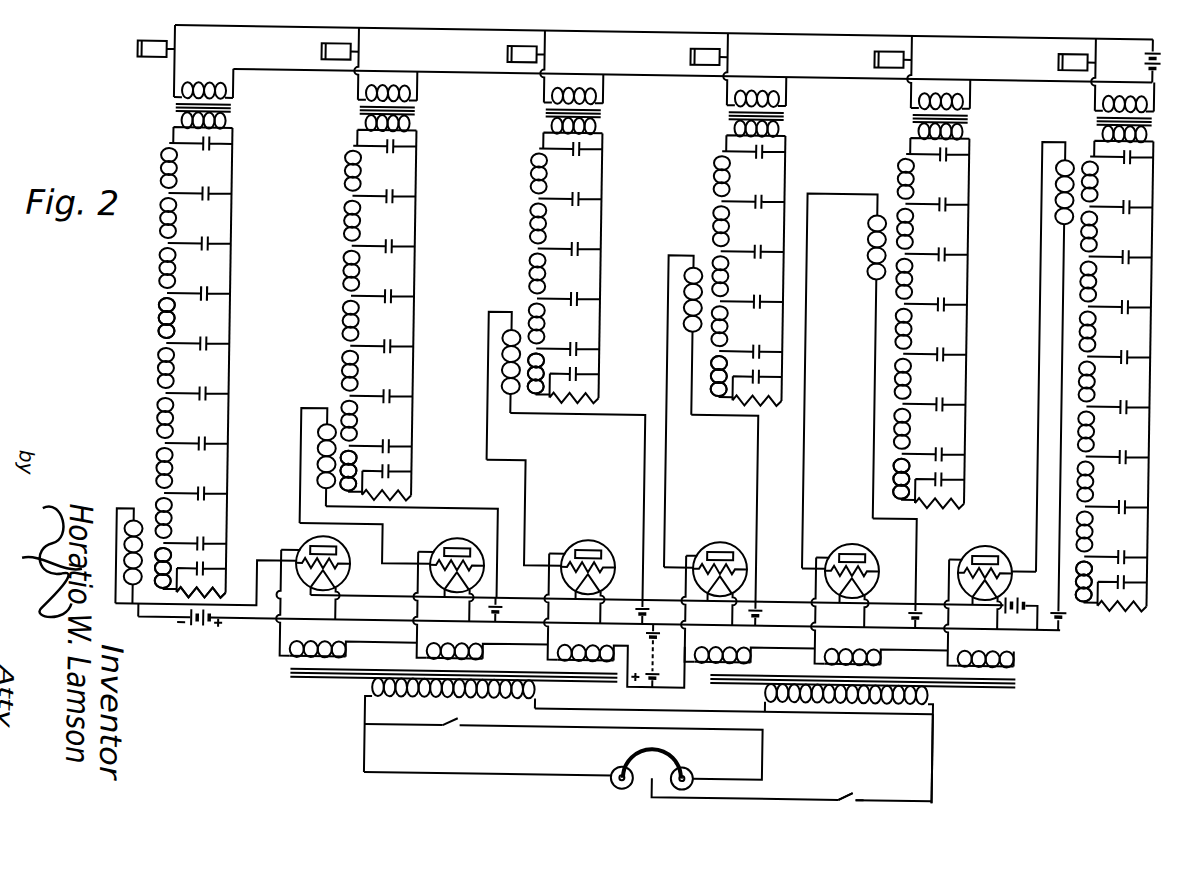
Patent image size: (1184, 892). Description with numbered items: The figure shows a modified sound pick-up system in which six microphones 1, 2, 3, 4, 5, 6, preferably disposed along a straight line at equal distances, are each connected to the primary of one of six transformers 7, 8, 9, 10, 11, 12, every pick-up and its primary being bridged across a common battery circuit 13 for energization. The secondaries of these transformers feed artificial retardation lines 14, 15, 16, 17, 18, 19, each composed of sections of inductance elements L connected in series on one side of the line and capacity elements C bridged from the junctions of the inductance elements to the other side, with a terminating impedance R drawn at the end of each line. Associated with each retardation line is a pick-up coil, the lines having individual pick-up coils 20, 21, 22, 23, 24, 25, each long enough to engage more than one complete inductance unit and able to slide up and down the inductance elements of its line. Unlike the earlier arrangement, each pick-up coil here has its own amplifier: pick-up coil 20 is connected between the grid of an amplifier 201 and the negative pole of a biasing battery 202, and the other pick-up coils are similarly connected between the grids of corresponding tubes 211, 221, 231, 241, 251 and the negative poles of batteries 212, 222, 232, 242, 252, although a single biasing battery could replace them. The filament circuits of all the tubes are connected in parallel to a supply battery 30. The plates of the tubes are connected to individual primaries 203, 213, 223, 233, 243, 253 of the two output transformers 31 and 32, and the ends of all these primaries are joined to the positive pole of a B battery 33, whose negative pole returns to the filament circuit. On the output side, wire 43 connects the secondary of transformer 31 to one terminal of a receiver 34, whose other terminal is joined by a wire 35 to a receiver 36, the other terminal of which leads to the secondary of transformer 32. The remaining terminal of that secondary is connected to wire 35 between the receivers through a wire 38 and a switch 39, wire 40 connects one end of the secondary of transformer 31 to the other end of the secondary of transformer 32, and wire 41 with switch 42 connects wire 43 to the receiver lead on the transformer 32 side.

The microphone 1 is at (146, 47).
The microphone 2 is at (330, 50).
The microphone 3 is at (517, 53).
The microphone 4 is at (702, 55).
The microphone 5 is at (880, 58).
The microphone 6 is at (1066, 61).
The transformer 7 is at (191, 106).
The transformer 8 is at (375, 108).
The transformer 9 is at (560, 111).
The transformer 10 is at (741, 114).
The transformer 11 is at (925, 116).
The transformer 12 is at (1110, 119).
The common battery circuit 13 is at (1071, 60).
The artificial line 14 is at (234, 201).
The artificial line 15 is at (418, 190).
The artificial line 16 is at (604, 163).
The artificial line 17 is at (787, 152).
The artificial line 18 is at (971, 152).
The artificial line 19 is at (1155, 158).
The inductance element L is at (163, 323).
The capacity element C is at (207, 303).
The resistance R is at (225, 591).
The pick-up coil 20 is at (141, 516).
The pick-up coil 21 is at (332, 404).
The pick-up coil 22 is at (513, 322).
The pick-up coil 23 is at (691, 256).
The pick-up coil 24 is at (873, 230).
The pick-up coil 25 is at (1055, 196).
The amplifier 201 is at (311, 540).
The tube 211 is at (457, 569).
The tube 221 is at (588, 570).
The tube 231 is at (720, 569).
The tube 241 is at (852, 573).
The tube 251 is at (989, 574).
The biasing battery 202 is at (200, 629).
The battery 212 is at (510, 610).
The battery 222 is at (625, 611).
The battery 232 is at (775, 614).
The battery 242 is at (899, 617).
The battery 252 is at (1072, 618).
The primary 203 is at (319, 647).
The primary 213 is at (464, 647).
The primary 223 is at (604, 647).
The primary 233 is at (734, 647).
The primary 243 is at (864, 647).
The primary 253 is at (999, 647).
The supply battery 30 is at (1030, 590).
The B battery 33 is at (649, 656).
The transformer 31 is at (370, 680).
The transformer 32 is at (940, 680).
The receiver 34 is at (628, 782).
The wire 35 is at (652, 763).
The receiver 36 is at (705, 768).
The wire 38 is at (943, 742).
The switch 39 is at (855, 788).
The wire 40 is at (734, 703).
The wire 41 is at (540, 723).
The switch 42 is at (460, 716).
The wire 43 is at (375, 746).